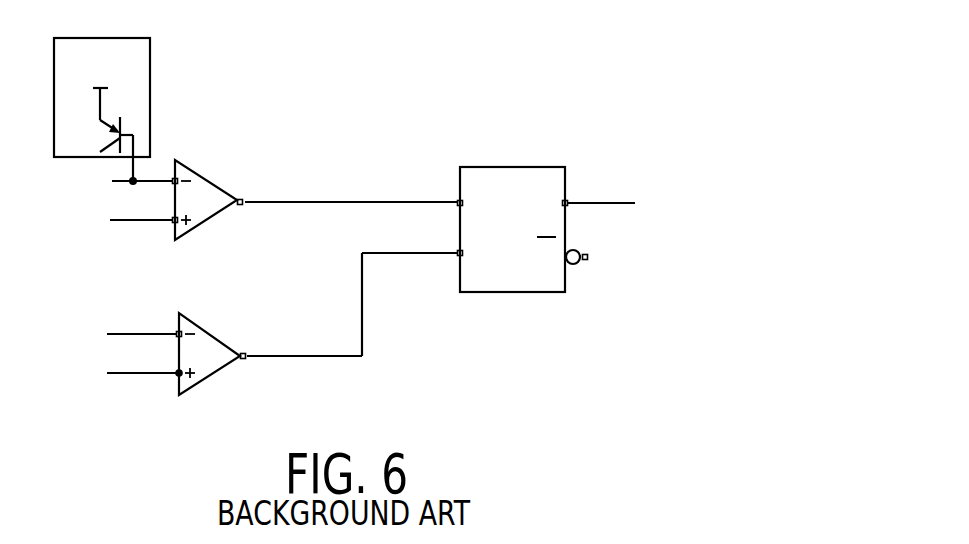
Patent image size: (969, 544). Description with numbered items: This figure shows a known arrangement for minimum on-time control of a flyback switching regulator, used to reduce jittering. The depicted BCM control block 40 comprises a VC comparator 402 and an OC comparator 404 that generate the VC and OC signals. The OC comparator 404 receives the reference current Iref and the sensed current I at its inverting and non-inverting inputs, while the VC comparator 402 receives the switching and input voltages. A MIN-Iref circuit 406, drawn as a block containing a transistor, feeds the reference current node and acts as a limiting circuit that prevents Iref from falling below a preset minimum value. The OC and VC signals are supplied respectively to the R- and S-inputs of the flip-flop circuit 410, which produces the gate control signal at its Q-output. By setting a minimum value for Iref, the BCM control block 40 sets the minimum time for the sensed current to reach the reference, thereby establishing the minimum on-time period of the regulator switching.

The BCM control block 40 is at (468, 102).
The MIN-Iref circuit 406 is at (150, 52).
The OC comparator 404 is at (203, 171).
The VC comparator 402 is at (222, 342).
The flip-flop circuit 410 is at (520, 293).